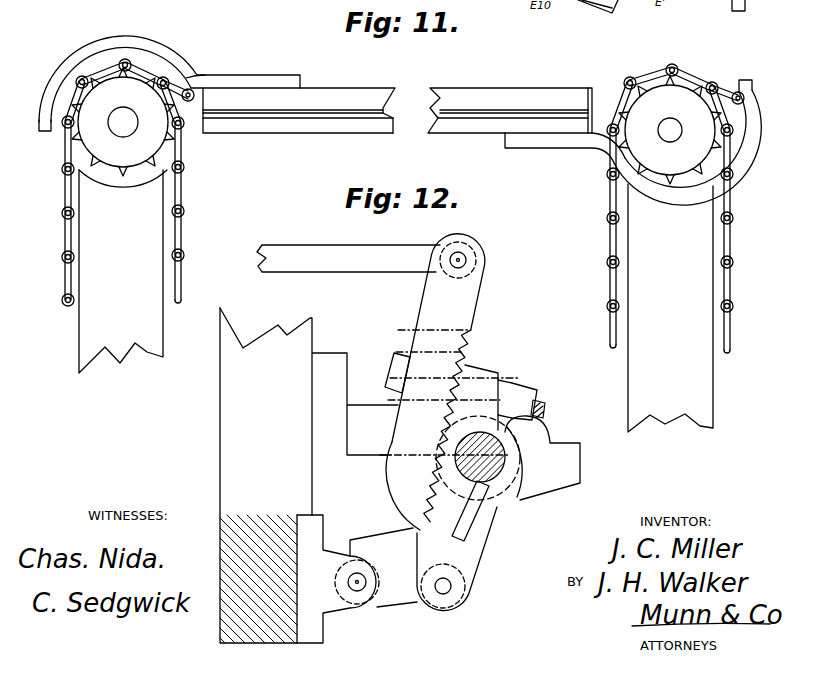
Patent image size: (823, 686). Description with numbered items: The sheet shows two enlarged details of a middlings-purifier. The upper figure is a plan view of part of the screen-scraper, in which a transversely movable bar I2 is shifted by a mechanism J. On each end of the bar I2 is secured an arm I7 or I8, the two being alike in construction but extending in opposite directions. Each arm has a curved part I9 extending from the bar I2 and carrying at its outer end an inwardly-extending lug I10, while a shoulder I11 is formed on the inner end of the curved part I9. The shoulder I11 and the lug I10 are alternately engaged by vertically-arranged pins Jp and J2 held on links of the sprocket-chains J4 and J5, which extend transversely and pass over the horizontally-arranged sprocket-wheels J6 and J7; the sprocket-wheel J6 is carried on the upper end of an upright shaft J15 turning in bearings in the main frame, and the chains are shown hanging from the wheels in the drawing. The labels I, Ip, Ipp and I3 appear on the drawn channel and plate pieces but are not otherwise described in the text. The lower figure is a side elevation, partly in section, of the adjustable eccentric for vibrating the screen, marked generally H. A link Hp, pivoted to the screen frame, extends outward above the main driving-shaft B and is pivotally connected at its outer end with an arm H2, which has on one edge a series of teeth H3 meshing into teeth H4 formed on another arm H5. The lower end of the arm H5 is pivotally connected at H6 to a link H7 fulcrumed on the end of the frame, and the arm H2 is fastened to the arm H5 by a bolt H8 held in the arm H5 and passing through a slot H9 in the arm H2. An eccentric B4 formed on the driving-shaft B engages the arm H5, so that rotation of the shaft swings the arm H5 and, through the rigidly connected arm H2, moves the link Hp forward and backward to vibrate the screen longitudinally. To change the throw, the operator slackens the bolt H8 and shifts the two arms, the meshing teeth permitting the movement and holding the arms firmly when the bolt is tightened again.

In FIG. 11, the channel bar I is at (293, 93).
In FIG. 11, the channel bar section (I prime) Ip is at (491, 108).
In FIG. 11, the channel end plate (I double prime) Ipp is at (602, 132).
In FIG. 11, the bar I2 is at (298, 128).
In FIG. 11, the channel top lip I3 is at (265, 97).
In FIG. 11, the arm I7 is at (206, 73).
In FIG. 11, the arm I8 is at (569, 144).
In FIG. 11, the curved part I9 is at (755, 160).
In FIG. 11, the lug I10 is at (759, 69).
In FIG. 11, the shoulder I11 is at (210, 91).
In FIG. 11, the mechanism J is at (52, 211).
In FIG. 11, the pin Jp is at (195, 132).
In FIG. 11, the pin J2 is at (730, 90).
In FIG. 11, the sprocket-chain J4 is at (66, 288).
In FIG. 11, the sprocket-chain J5 is at (611, 246).
In FIG. 11, the sprocket-wheel J6 is at (131, 158).
In FIG. 11, the sprocket-wheel J7 is at (670, 130).
In FIG. 11, the upright shaft J15 is at (125, 118).
In FIG. 12, the housing H is at (483, 410).
In FIG. 12, the link Hp is at (366, 268).
In FIG. 12, the arm H2 is at (438, 310).
In FIG. 12, the teeth H3 is at (470, 346).
In FIG. 12, the teeth H4 is at (450, 416).
In FIG. 12, the arm H5 is at (456, 530).
In FIG. 12, the pivot H6 is at (450, 588).
In FIG. 12, the link H7 is at (399, 598).
In FIG. 12, the bolt H8 is at (541, 402).
In FIG. 12, the slot H9 is at (389, 358).
In FIG. 12, the main driving-shaft B is at (497, 470).
In FIG. 12, the eccentric B4 is at (484, 496).